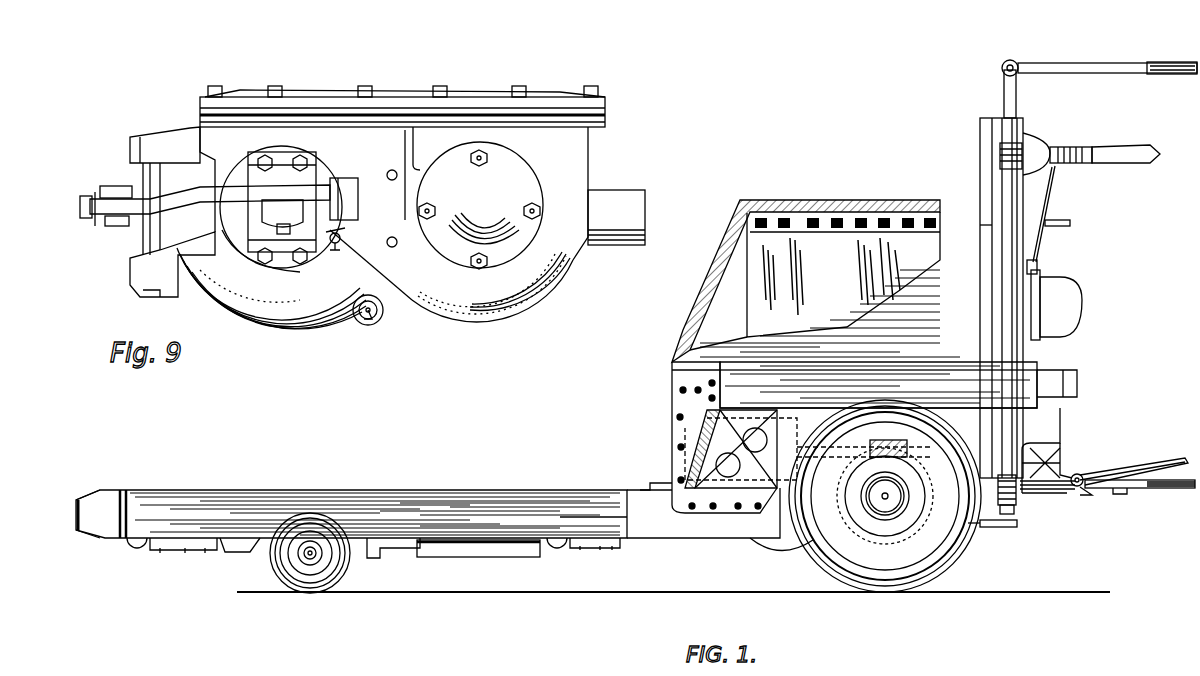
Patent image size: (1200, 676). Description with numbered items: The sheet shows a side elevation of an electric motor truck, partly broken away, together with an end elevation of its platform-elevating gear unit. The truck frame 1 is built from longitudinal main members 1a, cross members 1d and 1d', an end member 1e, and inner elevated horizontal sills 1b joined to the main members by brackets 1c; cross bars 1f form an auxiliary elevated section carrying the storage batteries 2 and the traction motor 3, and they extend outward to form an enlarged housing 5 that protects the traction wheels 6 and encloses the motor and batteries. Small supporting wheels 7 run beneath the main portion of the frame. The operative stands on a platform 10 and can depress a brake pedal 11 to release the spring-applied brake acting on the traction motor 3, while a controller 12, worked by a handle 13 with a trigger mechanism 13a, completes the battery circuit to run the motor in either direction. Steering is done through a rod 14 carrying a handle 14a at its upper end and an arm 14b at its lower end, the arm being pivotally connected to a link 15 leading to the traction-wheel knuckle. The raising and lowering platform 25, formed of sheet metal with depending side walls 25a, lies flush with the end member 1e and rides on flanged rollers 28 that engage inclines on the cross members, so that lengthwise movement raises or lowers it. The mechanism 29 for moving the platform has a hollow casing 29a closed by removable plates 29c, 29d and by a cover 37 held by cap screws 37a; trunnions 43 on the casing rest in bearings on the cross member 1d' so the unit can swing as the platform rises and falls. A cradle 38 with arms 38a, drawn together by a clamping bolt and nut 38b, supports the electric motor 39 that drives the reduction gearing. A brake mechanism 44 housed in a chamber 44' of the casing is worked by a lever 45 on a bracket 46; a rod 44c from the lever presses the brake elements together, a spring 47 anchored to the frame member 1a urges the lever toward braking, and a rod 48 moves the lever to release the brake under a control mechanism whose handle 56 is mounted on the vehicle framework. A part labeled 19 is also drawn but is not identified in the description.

In FIG. 1, the truck frame 1 is at (668, 442).
In FIG. 1, the longitudinal main members 1a is at (680, 540).
In FIG. 1, the inner elevated horizontal sills 1b is at (938, 368).
In FIG. 1, the brackets 1c is at (790, 433).
In FIG. 1, the cross members 1d is at (385, 558).
In FIG. 1, the cross member 1d' is at (453, 558).
In FIG. 1, the end member 1e is at (106, 494).
In FIG. 1, the cross bars 1f is at (660, 484).
In FIG. 1, the storage batteries 2 is at (815, 281).
In FIG. 1, the traction motor 3 is at (787, 412).
In FIG. 1, the enlarged housing 5 is at (866, 200).
In FIG. 1, the traction wheels 6 is at (958, 565).
In FIG. 1, the supporting wheels 7 is at (270, 566).
In FIG. 1, the platform 10 is at (1172, 490).
In FIG. 1, the brake pedal 11 is at (1144, 462).
In FIG. 1, the controller 12 is at (1080, 298).
In FIG. 1, the handle 13 is at (1105, 165).
In FIG. 1, the trigger mechanism 13a is at (1135, 165).
In FIG. 1, the rod 14 is at (1020, 111).
In FIG. 1, the handle 14a is at (1115, 74).
In FIG. 1, the arm 14b is at (1018, 512).
In FIG. 1, the link 15 is at (995, 530).
In FIG. 1, the mast column 19 is at (998, 242).
In FIG. 1, the raising and lowering platform 25 is at (425, 488).
In FIG. 1, the depending side walls 25a is at (580, 512).
In FIG. 1, the roller 28 is at (127, 542).
In FIG. 9, the platform moving mechanism 29 is at (432, 308).
In FIG. 9, the hollow casing 29a is at (508, 266).
In FIG. 9, the removable plate 29c is at (382, 240).
In FIG. 9, the removable plate 29d is at (460, 258).
In FIG. 9, the cover 37 is at (400, 96).
In FIG. 9, the cap screws 37a is at (276, 88).
In FIG. 9, the cradle 38 is at (355, 320).
In FIG. 9, the arms 38a is at (172, 128).
In FIG. 9, the clamping bolt and nut 38b is at (135, 170).
In FIG. 9, the electric motor 39 is at (230, 282).
In FIG. 9, the trunnions 43 is at (616, 247).
In FIG. 9, the brake mechanism 44 is at (269, 208).
In FIG. 9, the rod 44c is at (292, 224).
In FIG. 9, the chamber 44' is at (256, 254).
In FIG. 9, the lever 45 is at (205, 190).
In FIG. 9, the bracket 46 is at (338, 252).
In FIG. 9, the spring 47 is at (85, 222).
In FIG. 9, the rod 48 is at (115, 228).
In FIG. 1, the handle 56 is at (1070, 226).